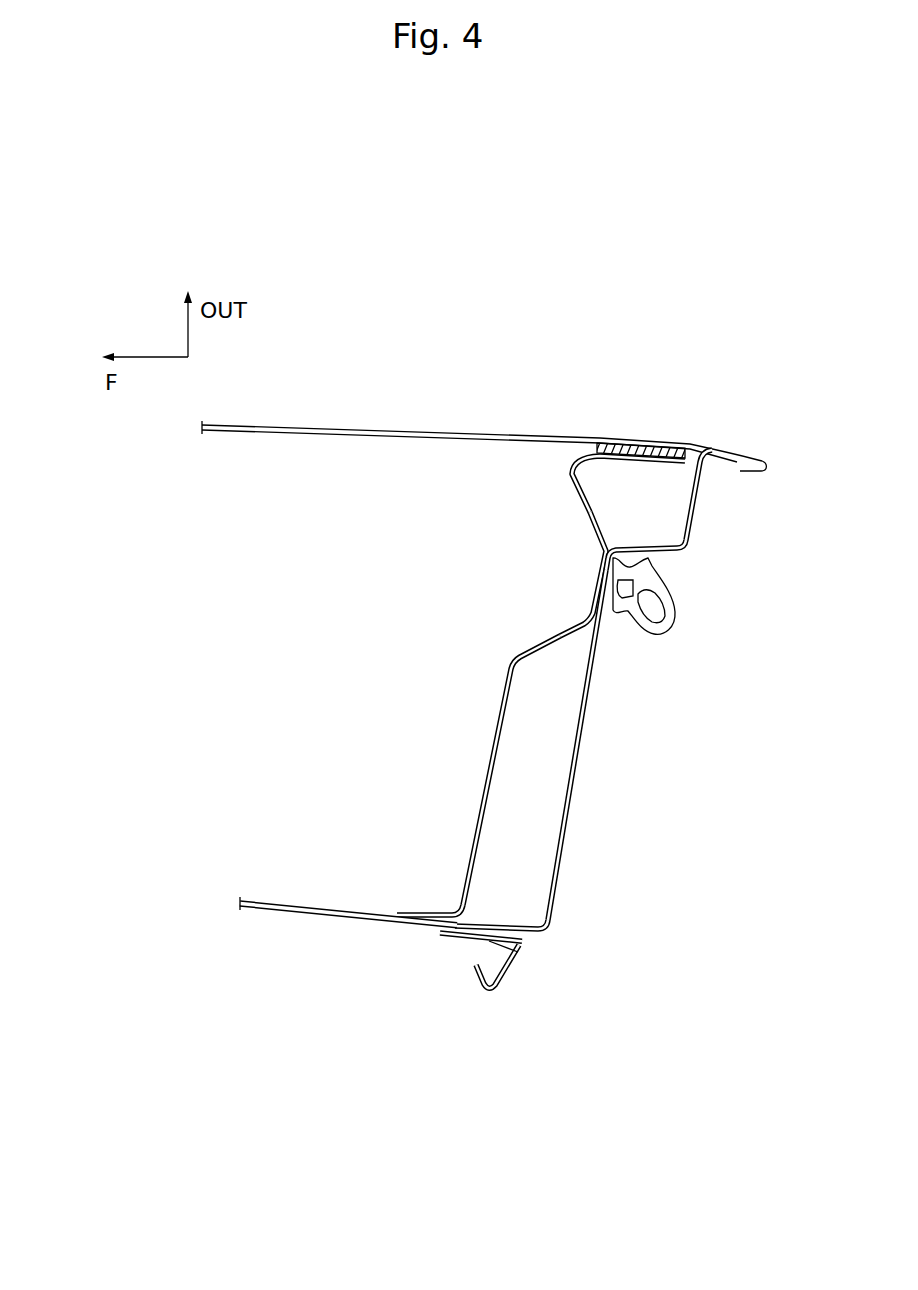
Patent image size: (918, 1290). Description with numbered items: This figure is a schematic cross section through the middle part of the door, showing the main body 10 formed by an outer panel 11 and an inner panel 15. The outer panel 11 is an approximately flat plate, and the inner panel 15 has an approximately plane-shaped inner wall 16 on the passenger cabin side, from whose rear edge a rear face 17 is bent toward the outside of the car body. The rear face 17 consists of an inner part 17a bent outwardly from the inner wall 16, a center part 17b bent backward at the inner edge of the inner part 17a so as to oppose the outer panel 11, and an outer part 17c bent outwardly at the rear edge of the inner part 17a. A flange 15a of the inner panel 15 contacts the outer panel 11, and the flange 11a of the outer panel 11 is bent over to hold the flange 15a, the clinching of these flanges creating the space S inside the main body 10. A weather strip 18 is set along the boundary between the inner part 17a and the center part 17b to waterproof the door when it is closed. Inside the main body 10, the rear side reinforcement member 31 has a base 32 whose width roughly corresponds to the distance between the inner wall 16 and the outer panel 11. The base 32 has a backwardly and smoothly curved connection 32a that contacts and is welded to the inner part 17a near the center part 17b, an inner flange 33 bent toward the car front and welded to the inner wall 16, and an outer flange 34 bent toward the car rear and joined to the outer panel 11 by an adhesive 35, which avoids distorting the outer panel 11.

The main body 10 is at (410, 362).
The outer panel 11 is at (316, 425).
The flange 11a is at (745, 478).
The inner panel 15 is at (265, 915).
The flange 15a is at (738, 497).
The inner wall 16 is at (360, 925).
The rear face 17 is at (616, 689).
The inner part 17a is at (580, 744).
The center part 17b is at (668, 560).
The outer part 17c is at (700, 530).
The weather strip 18 is at (653, 638).
The rear side reinforcement member 31 is at (522, 685).
The base 32 is at (478, 790).
The connection 32a is at (593, 588).
The inner flange 33 is at (415, 912).
The outer flange 34 is at (636, 461).
The adhesive 35 is at (641, 442).
The space S is at (318, 858).